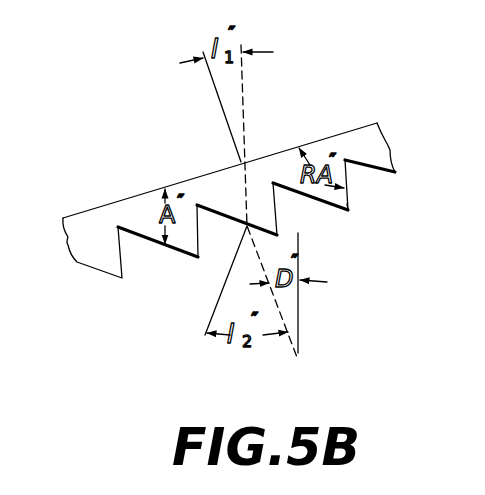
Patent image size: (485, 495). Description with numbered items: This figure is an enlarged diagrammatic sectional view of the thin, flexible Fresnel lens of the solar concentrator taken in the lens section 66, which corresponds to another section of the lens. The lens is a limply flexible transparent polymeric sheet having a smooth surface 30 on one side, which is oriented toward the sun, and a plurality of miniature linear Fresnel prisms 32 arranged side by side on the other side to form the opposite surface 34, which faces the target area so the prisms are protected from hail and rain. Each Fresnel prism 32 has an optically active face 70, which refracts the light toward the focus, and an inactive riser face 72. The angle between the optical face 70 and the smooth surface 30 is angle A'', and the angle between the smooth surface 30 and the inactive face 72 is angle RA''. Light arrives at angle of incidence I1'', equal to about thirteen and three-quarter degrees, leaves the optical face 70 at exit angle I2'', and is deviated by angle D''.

The smooth surface 30 is at (350, 131).
The Fresnel prisms 32 is at (385, 142).
The opposite surface 34 is at (348, 210).
The lens section 66 is at (195, 178).
The optically active face 70 is at (147, 240).
The inactive riser face 72 is at (199, 236).